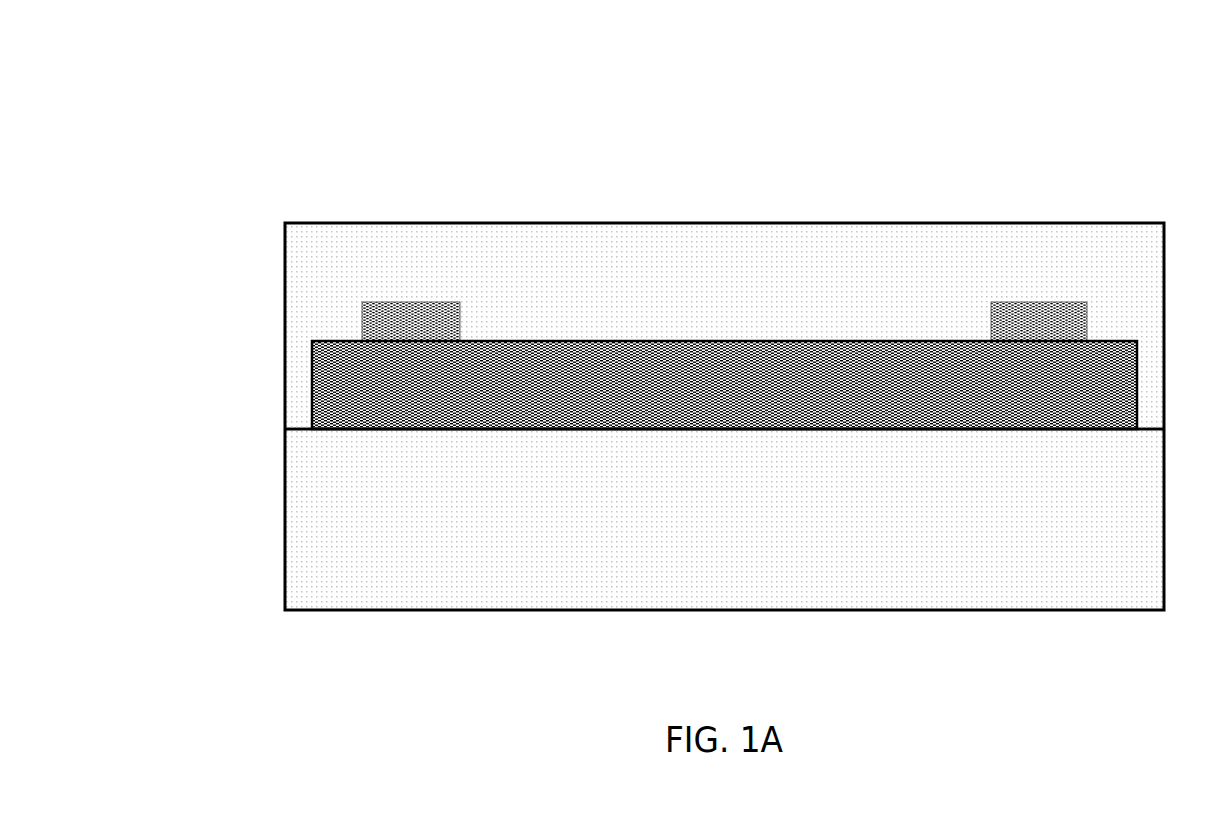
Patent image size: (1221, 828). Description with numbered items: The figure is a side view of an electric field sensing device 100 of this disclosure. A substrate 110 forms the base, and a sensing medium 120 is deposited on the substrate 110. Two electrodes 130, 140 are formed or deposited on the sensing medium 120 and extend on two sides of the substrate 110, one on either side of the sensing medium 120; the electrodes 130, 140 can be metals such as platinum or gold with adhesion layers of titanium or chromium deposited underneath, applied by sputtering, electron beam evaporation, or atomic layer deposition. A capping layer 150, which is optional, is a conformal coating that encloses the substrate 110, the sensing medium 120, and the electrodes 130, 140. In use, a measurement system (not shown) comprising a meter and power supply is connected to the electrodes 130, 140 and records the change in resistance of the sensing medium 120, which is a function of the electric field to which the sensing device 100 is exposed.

The electric field sensing device 100 is at (250, 172).
The substrate 110 is at (403, 515).
The sensing medium 120 is at (362, 367).
The electrode 130 is at (420, 272).
The electrode 140 is at (1023, 273).
The capping layer 150 is at (1122, 232).